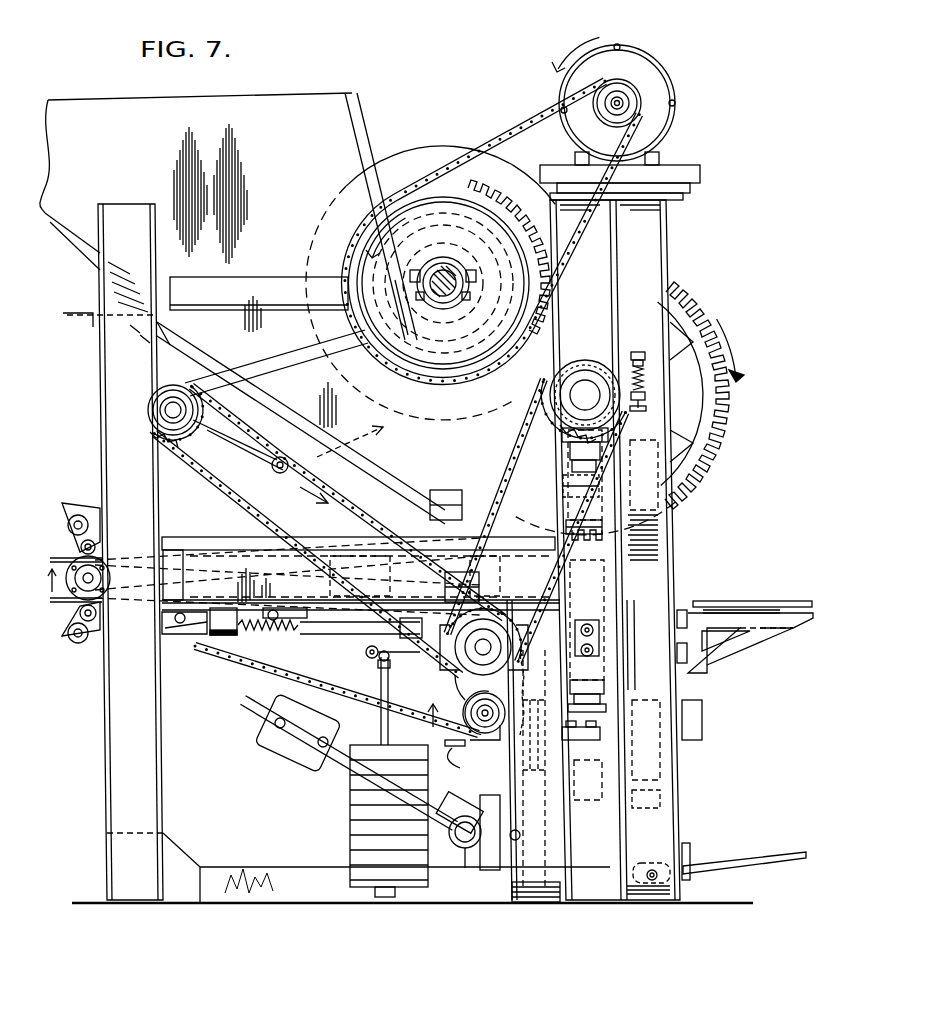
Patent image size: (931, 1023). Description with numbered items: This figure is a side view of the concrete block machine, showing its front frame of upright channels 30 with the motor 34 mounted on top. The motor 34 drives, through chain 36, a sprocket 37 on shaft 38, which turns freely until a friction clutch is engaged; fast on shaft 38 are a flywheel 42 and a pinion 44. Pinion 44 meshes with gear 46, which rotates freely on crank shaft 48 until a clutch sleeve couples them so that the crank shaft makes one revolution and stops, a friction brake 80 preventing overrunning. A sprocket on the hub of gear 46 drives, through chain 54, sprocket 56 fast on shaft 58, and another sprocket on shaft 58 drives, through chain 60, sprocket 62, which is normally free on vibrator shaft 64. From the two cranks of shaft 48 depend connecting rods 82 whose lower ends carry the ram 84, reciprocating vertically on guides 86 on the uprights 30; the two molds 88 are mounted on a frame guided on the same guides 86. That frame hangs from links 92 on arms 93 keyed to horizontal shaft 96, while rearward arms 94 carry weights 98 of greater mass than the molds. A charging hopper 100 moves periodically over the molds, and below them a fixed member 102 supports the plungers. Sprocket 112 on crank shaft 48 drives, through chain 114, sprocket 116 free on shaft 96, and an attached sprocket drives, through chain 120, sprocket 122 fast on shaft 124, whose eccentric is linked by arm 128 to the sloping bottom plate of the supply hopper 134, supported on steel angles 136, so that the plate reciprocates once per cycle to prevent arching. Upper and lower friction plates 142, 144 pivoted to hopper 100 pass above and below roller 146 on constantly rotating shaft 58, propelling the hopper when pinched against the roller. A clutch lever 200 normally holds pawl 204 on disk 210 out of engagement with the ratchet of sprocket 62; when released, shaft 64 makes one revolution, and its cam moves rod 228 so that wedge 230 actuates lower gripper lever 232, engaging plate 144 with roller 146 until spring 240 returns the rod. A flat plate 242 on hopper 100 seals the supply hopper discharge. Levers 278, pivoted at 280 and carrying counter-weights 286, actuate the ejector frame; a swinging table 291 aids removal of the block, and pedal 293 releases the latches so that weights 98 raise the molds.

The upright channels 30 is at (683, 790).
The motor 34 is at (655, 80).
The chain 36 is at (492, 150).
The sprocket 37 is at (478, 198).
The shaft 38 is at (443, 270).
The flywheel 42 is at (393, 172).
The pinion 44 is at (478, 262).
The gear 46 is at (701, 316).
The crank shaft 48 is at (592, 390).
The chain 54 is at (438, 486).
The sprocket 56 is at (80, 588).
The shaft 58 is at (97, 553).
The chain 60 is at (234, 678).
The sprocket 62 is at (450, 694).
The vibrator shaft 64 is at (462, 757).
The friction brake 80 is at (642, 406).
The connecting rod 82 is at (598, 466).
The ram 84 is at (604, 498).
The guides 86 is at (604, 568).
The molds 88 is at (600, 690).
The links 92 is at (622, 628).
The arms 93 is at (573, 636).
The arms 94 is at (366, 654).
The horizontal shaft 96 is at (486, 642).
The weights 98 is at (367, 813).
The charging hopper 100 is at (337, 638).
The fixed member 102 is at (640, 812).
The sprocket 112 is at (606, 430).
The chain 114 is at (578, 574).
The sprocket 116 is at (467, 588).
The chain 120 is at (348, 503).
The sprocket 122 is at (196, 418).
The shaft 124 is at (172, 412).
The arm 128 is at (235, 447).
The supply hopper 134 is at (328, 150).
The steel angles 136 is at (73, 237).
The upper friction plate 142 is at (290, 535).
The lower friction plate 144 is at (296, 597).
The roller 146 is at (97, 627).
The clutch lever 200 is at (502, 745).
The pawl 204 is at (457, 742).
The disk 210 is at (453, 720).
The rod 228 is at (378, 663).
The wedge 230 is at (193, 640).
The lower gripper lever 232 is at (172, 620).
The spring 240 is at (265, 641).
The flat plate 242 is at (250, 497).
The levers 278 is at (510, 893).
The pivot 280 is at (463, 849).
The counter-weight 286 is at (273, 742).
The swinging table 291 is at (770, 604).
The pedal 293 is at (775, 857).